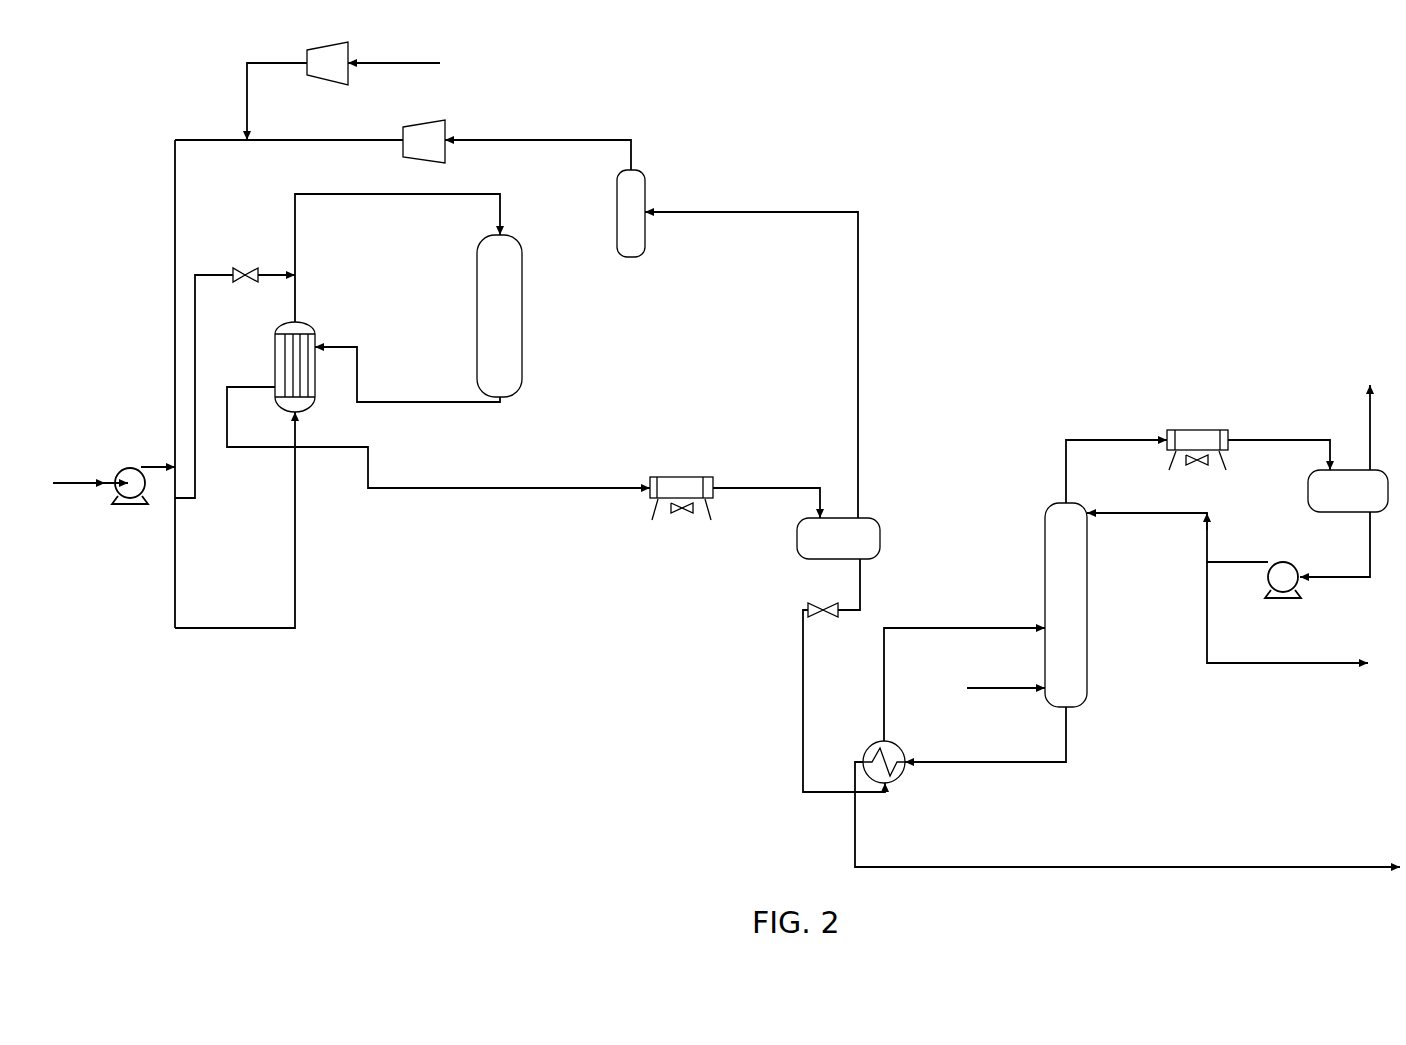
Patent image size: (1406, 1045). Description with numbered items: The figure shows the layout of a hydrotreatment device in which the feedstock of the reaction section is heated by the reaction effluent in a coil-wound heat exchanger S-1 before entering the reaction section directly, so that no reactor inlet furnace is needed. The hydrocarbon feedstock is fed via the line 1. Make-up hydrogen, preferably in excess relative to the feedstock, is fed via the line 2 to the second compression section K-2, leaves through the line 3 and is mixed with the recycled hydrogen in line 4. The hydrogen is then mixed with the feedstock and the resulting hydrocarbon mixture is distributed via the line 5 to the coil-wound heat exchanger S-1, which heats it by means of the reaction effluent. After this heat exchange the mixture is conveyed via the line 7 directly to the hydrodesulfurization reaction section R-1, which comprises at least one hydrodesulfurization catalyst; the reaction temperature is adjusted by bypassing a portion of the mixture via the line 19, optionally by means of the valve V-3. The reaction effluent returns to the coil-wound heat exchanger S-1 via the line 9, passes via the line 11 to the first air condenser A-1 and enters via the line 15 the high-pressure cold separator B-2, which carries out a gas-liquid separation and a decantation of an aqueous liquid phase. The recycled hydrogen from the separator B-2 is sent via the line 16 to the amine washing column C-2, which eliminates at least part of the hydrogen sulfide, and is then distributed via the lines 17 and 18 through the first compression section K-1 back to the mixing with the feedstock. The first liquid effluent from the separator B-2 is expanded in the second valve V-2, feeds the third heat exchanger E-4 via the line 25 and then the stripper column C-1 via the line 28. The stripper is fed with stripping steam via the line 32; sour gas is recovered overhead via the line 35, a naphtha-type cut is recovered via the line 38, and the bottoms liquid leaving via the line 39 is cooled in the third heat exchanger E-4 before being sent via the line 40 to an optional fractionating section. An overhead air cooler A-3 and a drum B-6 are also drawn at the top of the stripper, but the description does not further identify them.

The line 1 is at (90, 473).
The line 2 is at (394, 54).
The line 3 is at (277, 101).
The line 4 is at (184, 384).
The line 5 is at (235, 520).
The line 7 is at (397, 258).
The line 9 is at (407, 374).
The line 11 is at (438, 437).
The line 15 is at (766, 494).
The line 16 is at (751, 365).
The line 17 is at (538, 145).
The line 18 is at (289, 128).
The line 19 is at (235, 386).
The line 25 is at (844, 675).
The line 28 is at (964, 675).
The line 32 is at (1006, 679).
The line 35 is at (1384, 427).
The line 38 is at (1287, 612).
The line 39 is at (997, 734).
The line 40 is at (1127, 814).
The second compression section K-2 is at (327, 63).
The first compression section K-1 is at (424, 141).
The valve V-3 is at (245, 262).
The coil-wound heat exchanger S-1 is at (319, 363).
The hydrotreatment or hydroconversion reaction section R-1 is at (499, 316).
The amine washing column C-2 is at (650, 213).
The first air condenser A-1 is at (681, 512).
The high-pressure cold separator B-2 is at (838, 538).
The second valve V-2 is at (823, 600).
The third heat exchanger E-4 is at (891, 751).
The separation column C-1 is at (1066, 605).
The air cooler A-3 is at (1197, 436).
The drum B-6 is at (1348, 491).